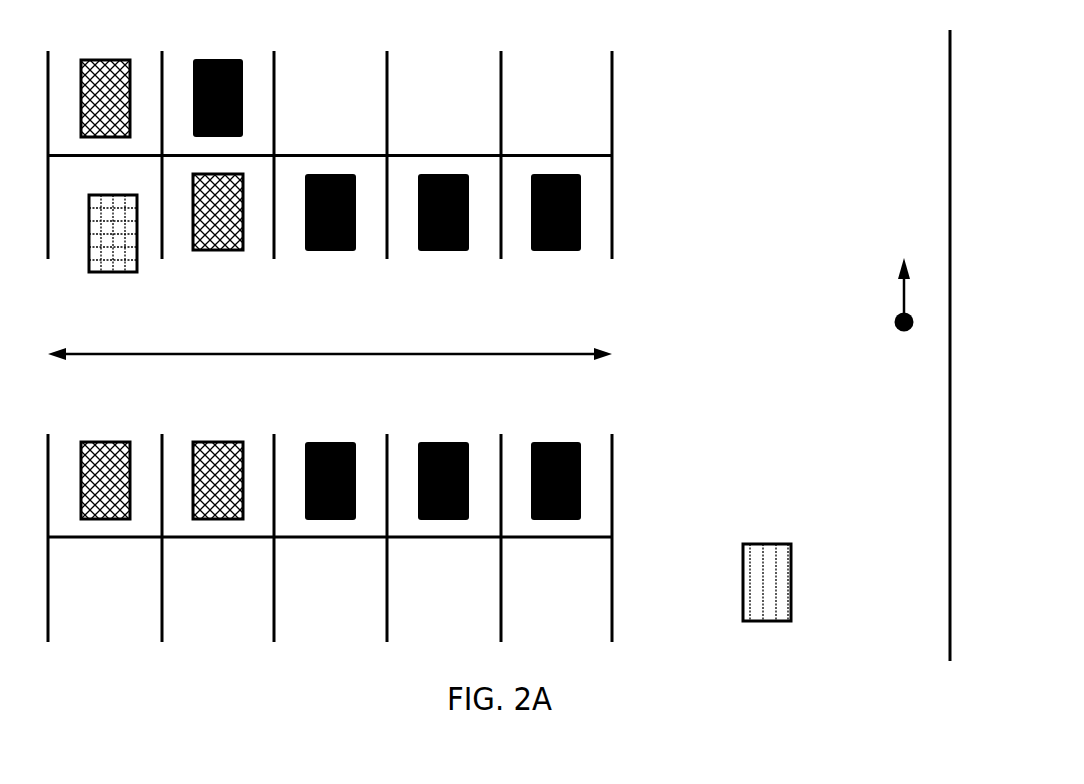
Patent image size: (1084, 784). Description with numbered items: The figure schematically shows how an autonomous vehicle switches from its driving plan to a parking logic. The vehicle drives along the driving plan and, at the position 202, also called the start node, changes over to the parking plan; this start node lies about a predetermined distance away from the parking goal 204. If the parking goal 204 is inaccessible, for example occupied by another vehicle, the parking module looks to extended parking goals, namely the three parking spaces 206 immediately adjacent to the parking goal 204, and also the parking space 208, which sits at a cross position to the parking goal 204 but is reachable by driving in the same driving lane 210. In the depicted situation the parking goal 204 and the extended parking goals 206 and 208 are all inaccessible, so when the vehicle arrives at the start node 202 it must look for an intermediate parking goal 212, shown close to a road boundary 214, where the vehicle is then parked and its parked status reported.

The position 202 is at (791, 578).
The parking goal 204 is at (68, 240).
The parking spaces 206 is at (58, 107).
The parking space 208 is at (257, 473).
The driving lane 210 is at (405, 353).
The intermediate parking goal 212 is at (895, 322).
The road boundary 214 is at (948, 137).